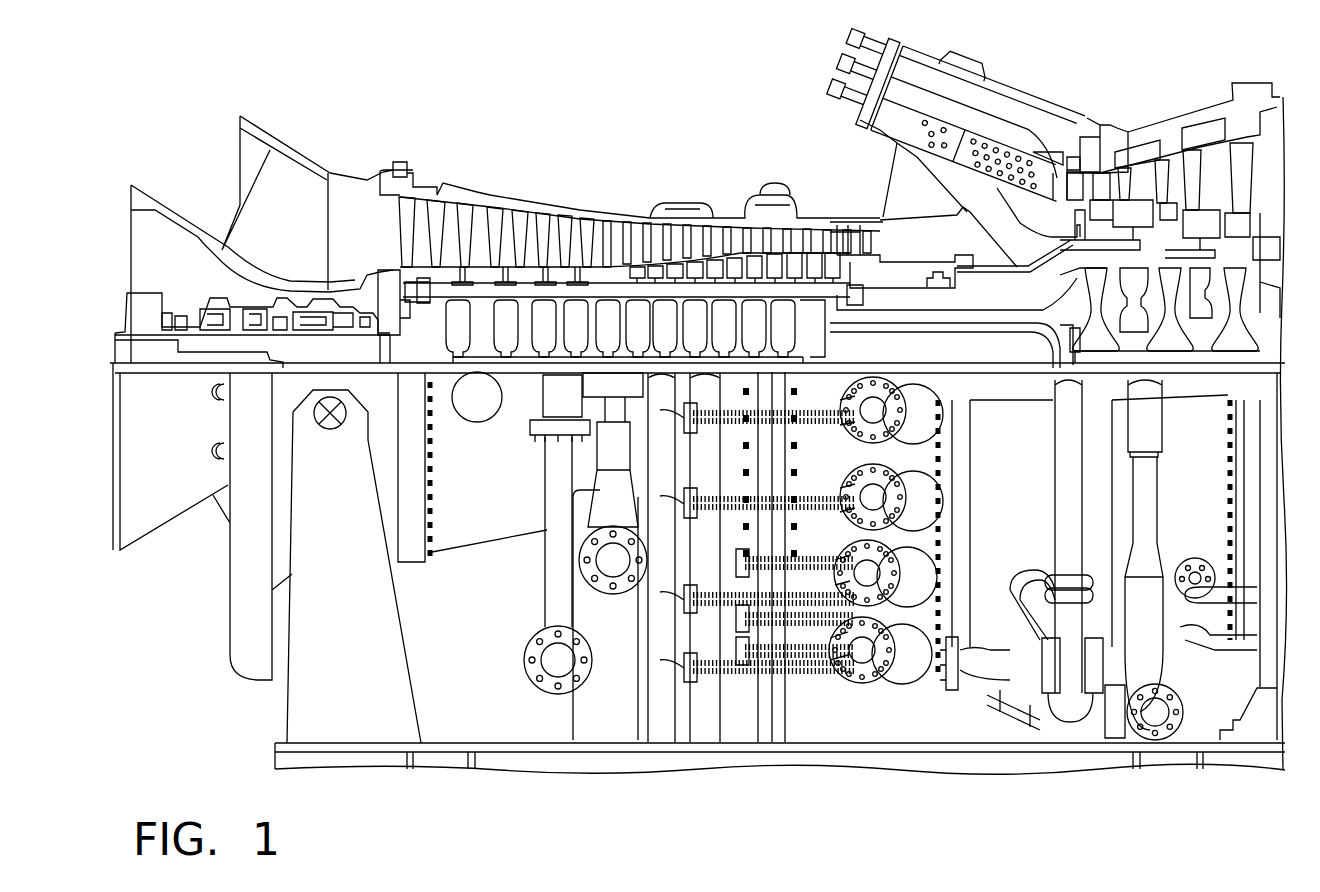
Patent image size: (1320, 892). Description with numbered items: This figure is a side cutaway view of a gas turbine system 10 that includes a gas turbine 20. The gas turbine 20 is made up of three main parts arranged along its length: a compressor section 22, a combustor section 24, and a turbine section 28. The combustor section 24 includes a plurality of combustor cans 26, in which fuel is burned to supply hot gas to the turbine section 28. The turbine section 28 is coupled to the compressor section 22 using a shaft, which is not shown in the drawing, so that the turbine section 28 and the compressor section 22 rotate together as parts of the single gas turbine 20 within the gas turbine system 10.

The gas turbine system 10 is at (192, 739).
The gas turbine 20 is at (205, 112).
The compressor section 22 is at (497, 492).
The combustor section 24 is at (807, 724).
The combustor cans 26 is at (900, 640).
The turbine section 28 is at (1025, 515).